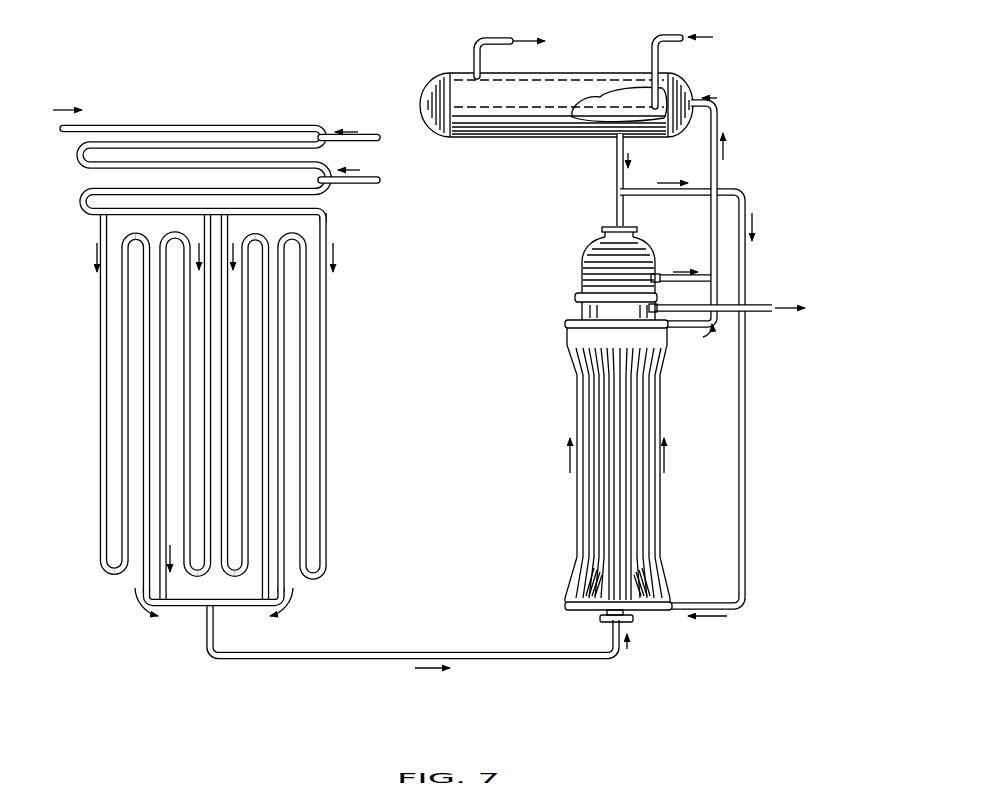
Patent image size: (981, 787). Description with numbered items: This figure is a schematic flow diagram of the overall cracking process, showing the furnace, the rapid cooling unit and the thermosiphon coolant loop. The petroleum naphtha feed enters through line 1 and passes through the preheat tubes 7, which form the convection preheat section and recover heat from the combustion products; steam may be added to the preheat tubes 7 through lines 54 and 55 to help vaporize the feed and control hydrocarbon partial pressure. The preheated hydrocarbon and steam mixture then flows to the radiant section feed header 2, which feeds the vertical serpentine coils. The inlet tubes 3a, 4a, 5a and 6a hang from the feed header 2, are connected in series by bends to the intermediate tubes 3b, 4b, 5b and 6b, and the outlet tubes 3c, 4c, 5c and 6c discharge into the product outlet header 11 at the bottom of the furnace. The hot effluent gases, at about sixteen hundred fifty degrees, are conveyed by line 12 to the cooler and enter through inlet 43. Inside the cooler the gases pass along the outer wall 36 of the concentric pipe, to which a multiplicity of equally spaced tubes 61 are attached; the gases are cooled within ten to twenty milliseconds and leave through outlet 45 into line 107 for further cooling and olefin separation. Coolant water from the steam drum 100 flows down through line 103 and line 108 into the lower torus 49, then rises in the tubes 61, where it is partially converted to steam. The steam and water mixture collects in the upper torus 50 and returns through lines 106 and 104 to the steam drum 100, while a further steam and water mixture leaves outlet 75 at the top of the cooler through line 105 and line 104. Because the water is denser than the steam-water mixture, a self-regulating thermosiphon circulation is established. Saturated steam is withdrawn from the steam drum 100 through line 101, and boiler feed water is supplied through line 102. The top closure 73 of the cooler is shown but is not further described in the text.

The line 1 is at (101, 123).
The radiant section feed header 2 is at (253, 212).
The inlet tube 3a is at (100, 324).
The tube 3b is at (123, 327).
The outlet tube 3c is at (150, 357).
The inlet tube 4a is at (203, 473).
The tube 4b is at (183, 440).
The outlet tube 4c is at (160, 403).
The inlet tube 5a is at (230, 316).
The tube 5b is at (247, 328).
The outlet tube 5c is at (273, 367).
The inlet tube 6a is at (326, 460).
The tube 6b is at (307, 432).
The outlet tube 6c is at (287, 400).
The preheat tubes 7 is at (302, 165).
The product outlet header 11 is at (190, 606).
The line 12 is at (330, 662).
The outer wall of concentric pipe 36 is at (637, 427).
The inlet 43 is at (615, 623).
The outlet 45 is at (649, 309).
The torus 49 is at (565, 606).
The torus 50 is at (565, 323).
The line 54 is at (373, 136).
The line 55 is at (366, 184).
The tubes 61 is at (610, 400).
The top closure 73 is at (617, 225).
The outlet 75 is at (656, 275).
The steam drum 100 is at (600, 98).
The line 101 is at (473, 52).
The line 102 is at (661, 58).
The line 103 is at (617, 158).
The line 104 is at (719, 118).
The line 105 is at (668, 281).
The line 106 is at (673, 334).
The line 107 is at (760, 305).
The line 108 is at (746, 436).